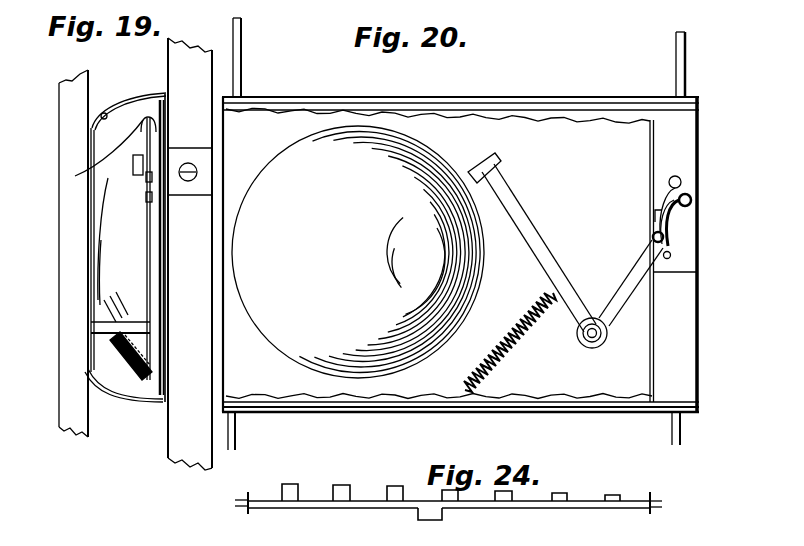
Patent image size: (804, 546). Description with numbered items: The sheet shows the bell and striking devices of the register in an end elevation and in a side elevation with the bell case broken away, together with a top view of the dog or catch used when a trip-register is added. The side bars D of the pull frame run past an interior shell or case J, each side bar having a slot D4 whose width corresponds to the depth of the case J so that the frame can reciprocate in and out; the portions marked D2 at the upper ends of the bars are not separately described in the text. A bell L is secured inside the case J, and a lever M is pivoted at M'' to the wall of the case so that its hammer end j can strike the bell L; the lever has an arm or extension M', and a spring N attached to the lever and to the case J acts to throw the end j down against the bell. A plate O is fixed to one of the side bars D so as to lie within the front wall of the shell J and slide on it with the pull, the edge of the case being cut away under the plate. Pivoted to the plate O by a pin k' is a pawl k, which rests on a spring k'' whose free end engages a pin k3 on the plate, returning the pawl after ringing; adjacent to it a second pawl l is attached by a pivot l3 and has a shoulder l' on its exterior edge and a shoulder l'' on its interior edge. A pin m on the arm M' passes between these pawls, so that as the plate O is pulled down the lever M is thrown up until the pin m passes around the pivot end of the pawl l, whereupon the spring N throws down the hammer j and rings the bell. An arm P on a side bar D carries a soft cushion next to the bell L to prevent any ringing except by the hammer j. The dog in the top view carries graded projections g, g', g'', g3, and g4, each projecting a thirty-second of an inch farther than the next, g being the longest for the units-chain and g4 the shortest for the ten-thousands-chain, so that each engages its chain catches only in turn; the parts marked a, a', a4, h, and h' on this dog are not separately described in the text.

In FIG. 19, the side bars D is at (135, 254).
In FIG. 20, the side bars D is at (468, 57).
In FIG. 20, the upper cleat D2 is at (245, 91).
In FIG. 19, the slot D4 is at (72, 405).
In FIG. 20, the slot D4 is at (236, 426).
In FIG. 19, the plate O is at (159, 105).
In FIG. 20, the plate O is at (671, 170).
In FIG. 19, the hammer end j is at (75, 176).
In FIG. 20, the hammer end j is at (484, 190).
In FIG. 19, the lever M is at (139, 247).
In FIG. 20, the lever M is at (537, 250).
In FIG. 19, the bell L is at (113, 250).
In FIG. 20, the bell L is at (358, 252).
In FIG. 20, the arm or extension M' is at (631, 282).
In FIG. 19, the pivot M'' is at (140, 338).
In FIG. 20, the pivot M'' is at (574, 365).
In FIG. 19, the arm P is at (72, 381).
In FIG. 20, the shell or case J is at (570, 160).
In FIG. 20, the spring N is at (510, 342).
In FIG. 20, the pin m is at (650, 237).
In FIG. 20, the pawl k is at (710, 222).
In FIG. 20, the pin or pivot k' is at (698, 196).
In FIG. 20, the spring k'' is at (674, 226).
In FIG. 20, the pin k3 is at (661, 262).
In FIG. 20, the pawl l is at (653, 209).
In FIG. 20, the shoulder l' is at (646, 217).
In FIG. 20, the shoulder l'' is at (639, 171).
In FIG. 20, the pin or pivot l3 is at (690, 176).
In FIG. 24, the comb bar a is at (449, 519).
In FIG. 24, the comb bar end a' is at (244, 513).
In FIG. 24, the comb bar end a4 is at (654, 514).
In FIG. 24, the notch h is at (430, 526).
In FIG. 24, the notch shoulder h' is at (402, 529).
In FIG. 24, the projection g is at (342, 483).
In FIG. 24, the projection g' is at (395, 483).
In FIG. 24, the projection g'' is at (512, 490).
In FIG. 24, the projection g3 is at (561, 491).
In FIG. 24, the projection g4 is at (612, 491).